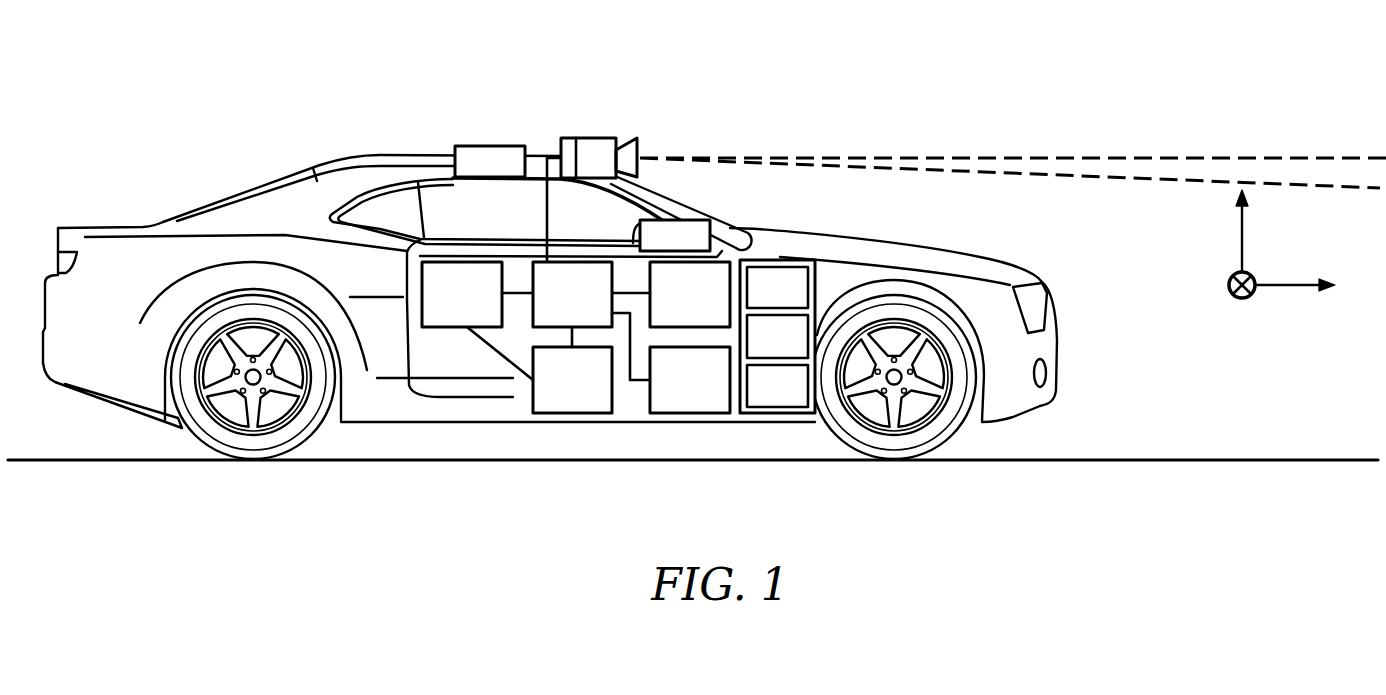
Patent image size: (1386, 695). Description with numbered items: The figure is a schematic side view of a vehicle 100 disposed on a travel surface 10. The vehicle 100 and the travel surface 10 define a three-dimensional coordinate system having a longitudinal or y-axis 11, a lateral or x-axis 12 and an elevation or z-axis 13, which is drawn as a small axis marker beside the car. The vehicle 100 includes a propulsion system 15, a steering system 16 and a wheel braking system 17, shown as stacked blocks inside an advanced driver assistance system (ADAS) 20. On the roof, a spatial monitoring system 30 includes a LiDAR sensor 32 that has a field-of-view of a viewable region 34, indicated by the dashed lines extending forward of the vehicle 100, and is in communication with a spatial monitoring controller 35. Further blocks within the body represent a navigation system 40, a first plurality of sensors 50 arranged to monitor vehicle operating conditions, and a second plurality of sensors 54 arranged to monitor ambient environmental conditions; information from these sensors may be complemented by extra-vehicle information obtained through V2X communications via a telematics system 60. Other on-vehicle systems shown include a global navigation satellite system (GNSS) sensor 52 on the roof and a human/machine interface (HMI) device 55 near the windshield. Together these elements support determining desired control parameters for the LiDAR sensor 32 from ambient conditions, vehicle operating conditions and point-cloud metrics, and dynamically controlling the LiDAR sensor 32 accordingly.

The vehicle 100 is at (780, 105).
The travel surface 10 is at (1135, 458).
The longitudinal or y-axis 11 is at (1302, 321).
The lateral or x-axis 12 is at (1245, 328).
The elevation or z-axis 13 is at (1207, 231).
The propulsion system 15 is at (790, 300).
The steering system 16 is at (790, 349).
The wheel braking system 17 is at (790, 398).
The advanced driver assistance system (ADAS) 20 is at (826, 301).
The spatial monitoring system 30 is at (581, 128).
The LiDAR sensor 32 is at (637, 124).
The viewable region 34 is at (823, 165).
The spatial monitoring controller 35 is at (559, 306).
The navigation system 40 is at (449, 306).
The first plurality of sensors 50 is at (677, 306).
The global navigation satellite system (GNSS) sensor 52 is at (455, 147).
The second plurality of sensors 54 is at (677, 393).
The human/machine interface (HMI) device 55 is at (727, 220).
The telematics system 60 is at (559, 393).